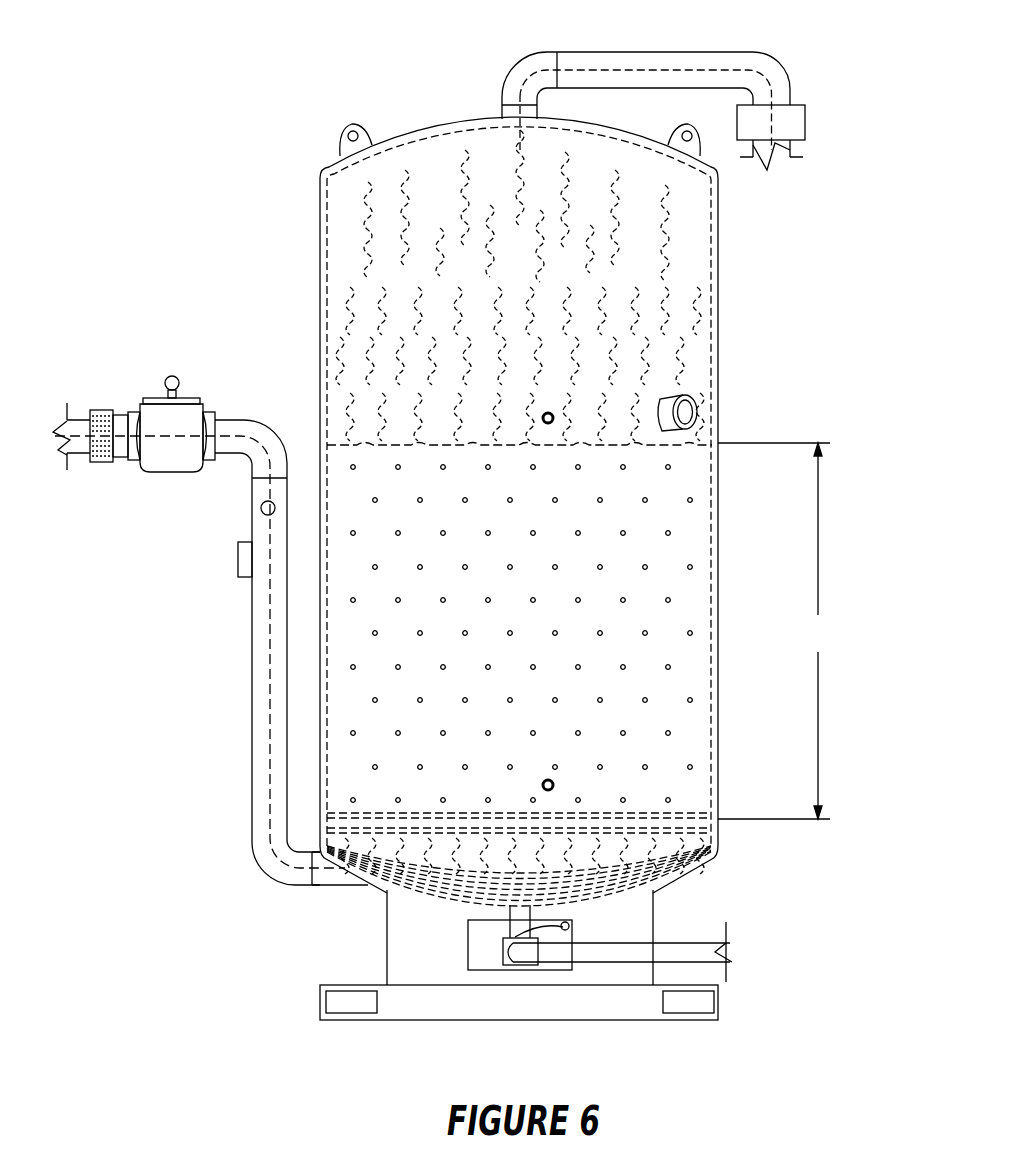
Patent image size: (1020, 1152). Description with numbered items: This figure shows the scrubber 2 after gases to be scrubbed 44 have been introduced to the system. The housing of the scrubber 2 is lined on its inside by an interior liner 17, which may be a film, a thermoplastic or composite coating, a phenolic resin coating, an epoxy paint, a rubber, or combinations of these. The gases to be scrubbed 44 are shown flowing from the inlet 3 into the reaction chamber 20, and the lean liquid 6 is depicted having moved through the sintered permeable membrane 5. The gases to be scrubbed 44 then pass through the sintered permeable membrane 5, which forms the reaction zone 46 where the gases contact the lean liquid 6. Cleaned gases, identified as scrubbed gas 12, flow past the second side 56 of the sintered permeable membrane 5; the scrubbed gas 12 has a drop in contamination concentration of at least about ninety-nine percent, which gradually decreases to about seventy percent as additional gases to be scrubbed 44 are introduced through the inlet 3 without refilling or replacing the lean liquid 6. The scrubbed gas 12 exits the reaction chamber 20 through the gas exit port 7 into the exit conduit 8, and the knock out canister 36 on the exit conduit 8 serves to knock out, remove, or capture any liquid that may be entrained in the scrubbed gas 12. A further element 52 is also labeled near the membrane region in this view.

The scrubber 2 is at (282, 100).
The inlet 3 is at (330, 877).
The sintered permeable membrane 5 is at (705, 827).
The lean liquid 6 is at (690, 552).
The gas exit port 7 is at (510, 110).
The exit conduit 8 is at (665, 50).
The scrubbed gas 12 is at (636, 58).
The interior liner 17 is at (447, 128).
The reaction chamber 20 is at (340, 222).
The knock out canister 36 is at (792, 123).
The gases to be scrubbed 44 is at (268, 650).
The reaction zone 46 is at (774, 631).
The screen 52 is at (703, 830).
The second side 56 is at (702, 818).